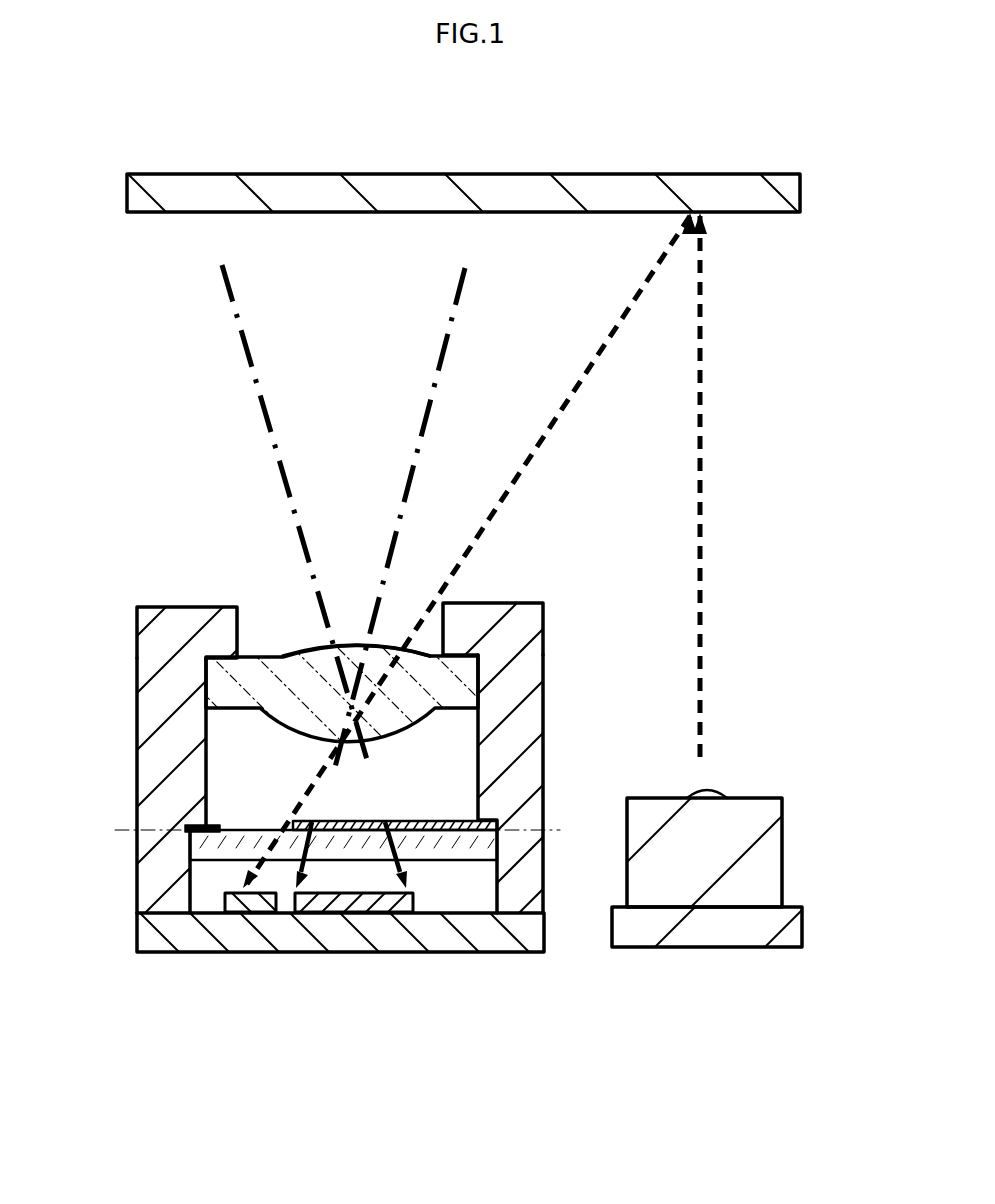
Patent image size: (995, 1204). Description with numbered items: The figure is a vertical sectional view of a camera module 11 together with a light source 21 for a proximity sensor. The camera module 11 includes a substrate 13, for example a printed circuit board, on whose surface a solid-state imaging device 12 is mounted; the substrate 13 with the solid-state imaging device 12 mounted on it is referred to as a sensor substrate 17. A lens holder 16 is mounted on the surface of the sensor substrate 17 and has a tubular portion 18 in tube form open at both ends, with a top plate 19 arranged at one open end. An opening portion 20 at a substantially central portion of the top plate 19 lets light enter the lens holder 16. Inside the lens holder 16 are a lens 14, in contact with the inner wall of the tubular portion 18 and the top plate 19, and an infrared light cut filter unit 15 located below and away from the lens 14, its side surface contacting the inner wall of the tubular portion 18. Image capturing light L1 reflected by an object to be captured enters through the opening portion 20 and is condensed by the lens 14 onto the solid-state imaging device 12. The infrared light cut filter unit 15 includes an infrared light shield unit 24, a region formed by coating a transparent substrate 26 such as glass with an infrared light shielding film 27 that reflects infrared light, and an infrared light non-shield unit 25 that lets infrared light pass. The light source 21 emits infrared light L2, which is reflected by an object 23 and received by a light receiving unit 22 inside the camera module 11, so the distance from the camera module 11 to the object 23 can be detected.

The camera module 11 is at (505, 582).
The solid-state imaging device 12 is at (343, 905).
The substrate 13 is at (395, 935).
The lens 14 is at (255, 683).
The infrared light cut filter unit 15 is at (268, 834).
The lens holder 16 is at (414, 758).
The sensor substrate 17 is at (340, 975).
The tubular portion 18 is at (500, 680).
The top plate 19 is at (500, 634).
The opening portion 20 is at (290, 637).
The light source 21 is at (756, 783).
The light receiving unit 22 is at (247, 905).
The object 23 is at (752, 190).
The infrared light shield unit 24 is at (300, 814).
The infrared light non-shield unit 25 is at (293, 816).
The transparent substrate 26 is at (190, 860).
The infrared light shielding film 27 is at (190, 835).
The image capturing light L1 is at (428, 410).
The infrared light L2 is at (620, 322).